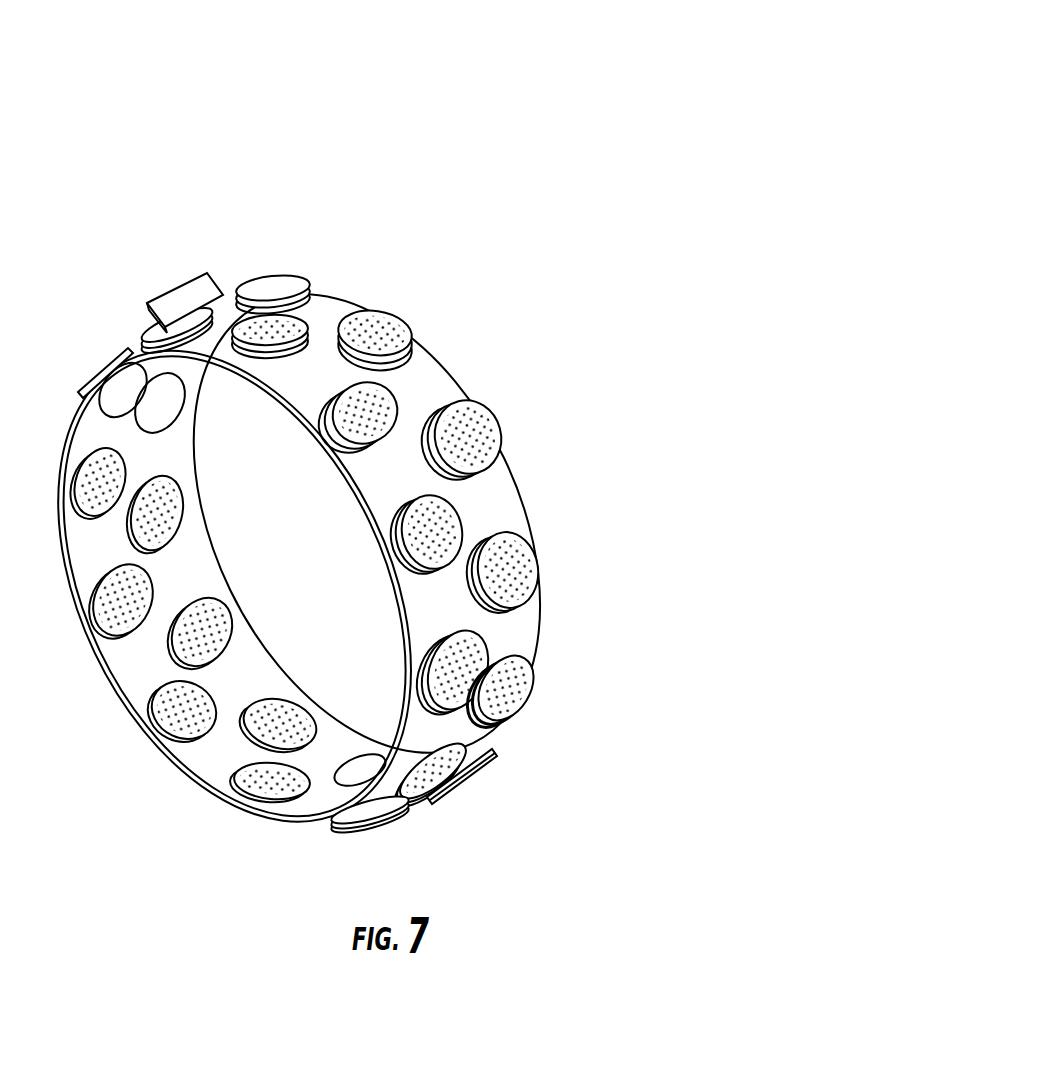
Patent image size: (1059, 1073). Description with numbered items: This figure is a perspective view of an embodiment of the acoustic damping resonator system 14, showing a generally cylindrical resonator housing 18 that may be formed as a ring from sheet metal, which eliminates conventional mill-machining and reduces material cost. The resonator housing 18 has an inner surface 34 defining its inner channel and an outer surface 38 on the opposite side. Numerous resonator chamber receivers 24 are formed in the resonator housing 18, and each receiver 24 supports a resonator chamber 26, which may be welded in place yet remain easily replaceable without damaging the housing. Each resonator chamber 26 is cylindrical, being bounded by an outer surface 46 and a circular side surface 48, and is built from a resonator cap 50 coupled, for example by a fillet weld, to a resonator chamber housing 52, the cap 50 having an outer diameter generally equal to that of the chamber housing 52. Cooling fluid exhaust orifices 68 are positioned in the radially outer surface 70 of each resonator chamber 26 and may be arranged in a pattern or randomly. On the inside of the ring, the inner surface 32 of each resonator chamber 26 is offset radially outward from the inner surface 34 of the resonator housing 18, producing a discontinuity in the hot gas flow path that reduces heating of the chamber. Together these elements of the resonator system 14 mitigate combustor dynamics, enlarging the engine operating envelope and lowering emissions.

The acoustic damping resonator system 14 is at (364, 444).
The resonator housing 18 is at (490, 507).
The resonator chamber receiver 24 is at (510, 603).
The resonator chamber 26 is at (185, 275).
The inner surface of the resonator chamber 32 is at (173, 523).
The inner surface of the resonator housing 34 is at (84, 553).
The outer surface of the resonator housing 38 is at (387, 480).
The outer surface of the resonator chamber 46 is at (360, 327).
The side surface of the resonator chamber 48 is at (343, 356).
The resonator cap 50 is at (520, 582).
The resonator chamber housing 52 is at (415, 362).
The cooling fluid exhaust orifice 68 is at (513, 717).
The radially outer surface of the resonator chamber 70 is at (497, 717).